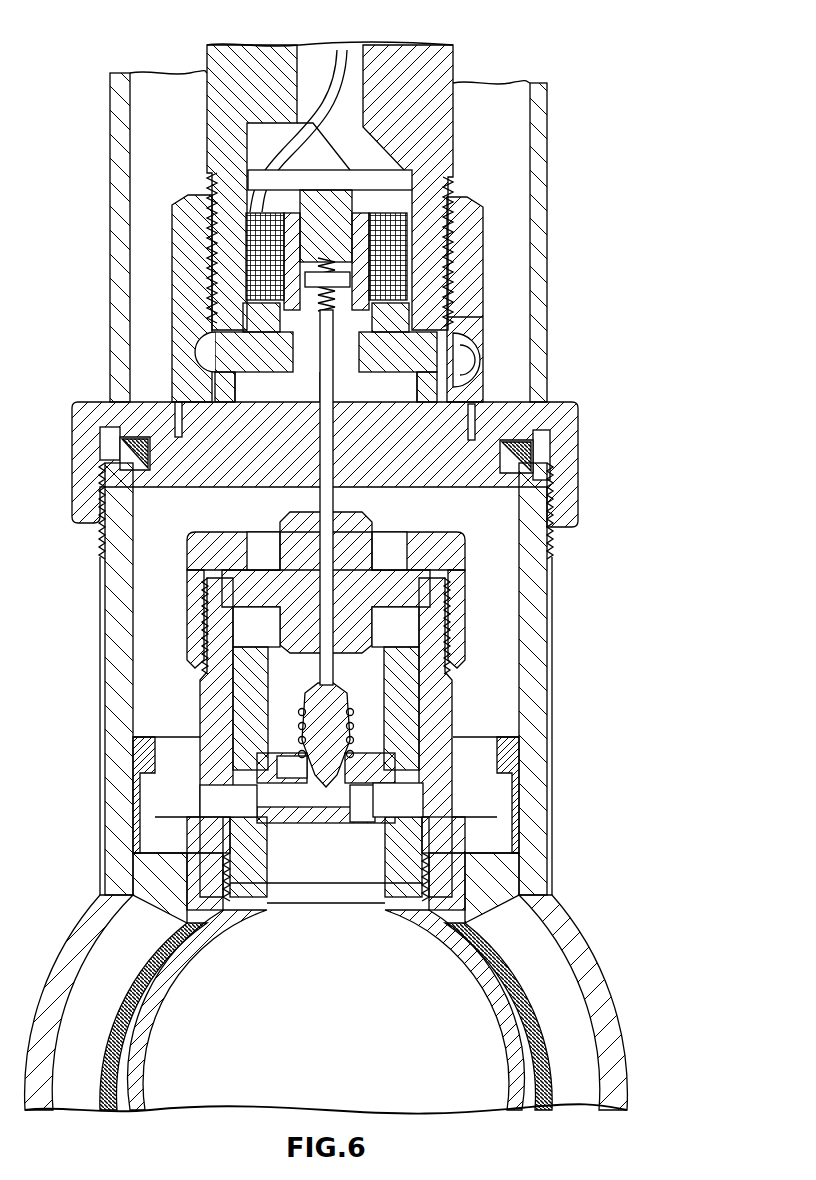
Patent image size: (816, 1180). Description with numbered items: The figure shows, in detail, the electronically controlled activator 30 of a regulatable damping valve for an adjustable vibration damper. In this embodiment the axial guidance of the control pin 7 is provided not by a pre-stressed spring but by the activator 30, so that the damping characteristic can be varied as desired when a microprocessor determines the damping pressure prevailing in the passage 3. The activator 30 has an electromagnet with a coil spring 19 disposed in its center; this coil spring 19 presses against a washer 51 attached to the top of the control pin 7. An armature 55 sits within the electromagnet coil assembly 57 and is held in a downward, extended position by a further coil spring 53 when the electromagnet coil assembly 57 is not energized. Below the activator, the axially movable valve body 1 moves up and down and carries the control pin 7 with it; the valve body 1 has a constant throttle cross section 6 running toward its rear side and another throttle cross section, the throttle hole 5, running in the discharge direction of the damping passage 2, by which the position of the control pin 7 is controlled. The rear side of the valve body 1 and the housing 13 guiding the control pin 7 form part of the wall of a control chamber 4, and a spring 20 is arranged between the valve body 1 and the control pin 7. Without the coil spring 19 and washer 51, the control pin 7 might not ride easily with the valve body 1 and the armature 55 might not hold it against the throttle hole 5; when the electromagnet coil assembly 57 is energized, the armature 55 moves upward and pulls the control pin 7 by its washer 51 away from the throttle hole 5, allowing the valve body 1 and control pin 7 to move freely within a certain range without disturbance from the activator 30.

The activator 30 is at (641, 25).
The electromagnet coil assembly 57 is at (412, 218).
The coil spring 53 is at (372, 243).
The washer 51 is at (320, 300).
The control pin 7 is at (330, 344).
The armature 55 is at (440, 320).
The housing 13 is at (447, 568).
The control chamber 4 is at (280, 733).
The constant throttle cross section 6 is at (413, 740).
The spring 20 is at (348, 748).
The valve body 1 is at (247, 763).
The damping passage 2 is at (220, 798).
The passage 3 is at (200, 831).
The throttle hole 5 is at (337, 817).
The coil spring 19 is at (448, 836).